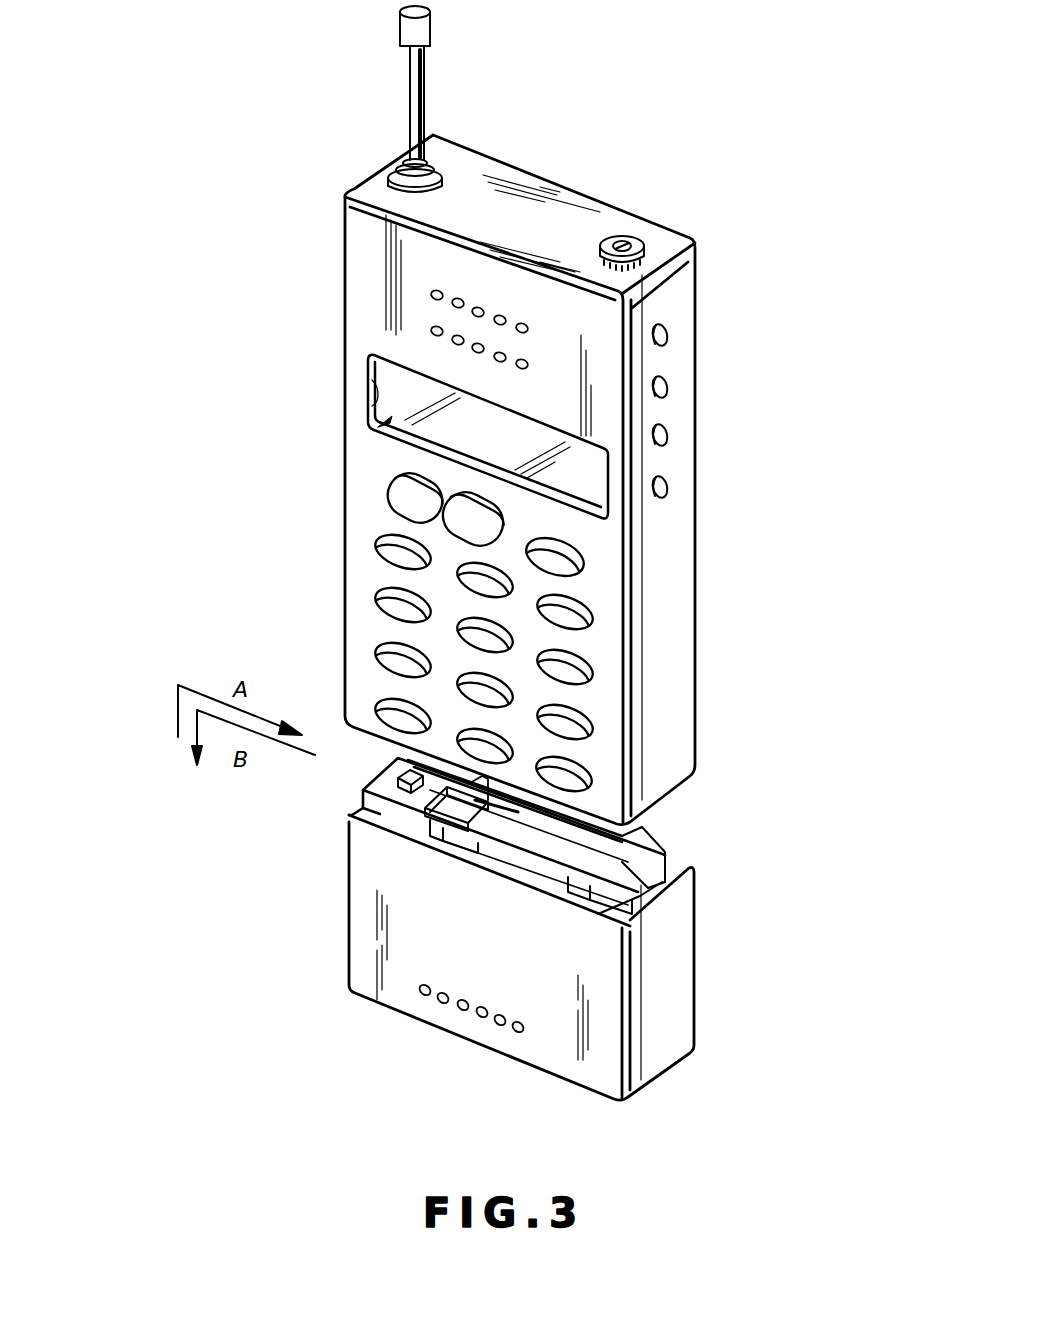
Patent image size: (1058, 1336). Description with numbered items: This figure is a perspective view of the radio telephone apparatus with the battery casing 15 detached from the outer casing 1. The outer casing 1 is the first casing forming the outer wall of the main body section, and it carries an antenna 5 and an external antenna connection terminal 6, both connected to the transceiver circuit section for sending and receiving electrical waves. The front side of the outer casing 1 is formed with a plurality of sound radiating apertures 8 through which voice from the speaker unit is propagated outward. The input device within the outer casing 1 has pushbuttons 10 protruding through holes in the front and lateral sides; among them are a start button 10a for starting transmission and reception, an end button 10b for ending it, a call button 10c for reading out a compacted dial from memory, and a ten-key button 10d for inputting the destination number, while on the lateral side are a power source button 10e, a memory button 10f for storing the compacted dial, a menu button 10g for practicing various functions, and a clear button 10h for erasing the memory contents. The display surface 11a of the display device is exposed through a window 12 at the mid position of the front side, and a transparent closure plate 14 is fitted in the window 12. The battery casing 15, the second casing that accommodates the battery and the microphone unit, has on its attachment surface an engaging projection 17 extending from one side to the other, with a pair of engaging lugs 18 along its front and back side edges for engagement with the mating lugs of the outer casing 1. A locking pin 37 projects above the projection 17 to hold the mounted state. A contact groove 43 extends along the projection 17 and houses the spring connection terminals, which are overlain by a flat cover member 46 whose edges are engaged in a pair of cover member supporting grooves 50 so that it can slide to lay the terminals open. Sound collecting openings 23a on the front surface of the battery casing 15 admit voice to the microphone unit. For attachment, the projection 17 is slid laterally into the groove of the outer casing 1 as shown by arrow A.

The outer casing 1 is at (508, 415).
The antenna 5 is at (427, 80).
The external antenna connection terminal 6 is at (630, 240).
The sound radiating apertures 8 is at (506, 318).
The pushbuttons 10 is at (427, 663).
The start button 10a is at (388, 500).
The end button 10b is at (445, 530).
The call button 10c is at (580, 553).
The ten-key button 10d is at (383, 661).
The power source button 10e is at (668, 333).
The memory button 10f is at (668, 385).
The menu button 10g is at (668, 435).
The clear button 10h is at (668, 487).
The display surface 11a is at (378, 432).
The window 12 is at (372, 402).
The closure plate 14 is at (365, 363).
The battery casing 15 is at (520, 919).
The engaging projection 17 is at (385, 805).
The engaging lugs 18 is at (437, 838).
The sound collecting openings 23a is at (483, 1012).
The locking pin 37 is at (400, 780).
The contact groove 43 is at (637, 885).
The cover member 46 is at (560, 850).
The cover member supporting grooves 50 is at (500, 800).